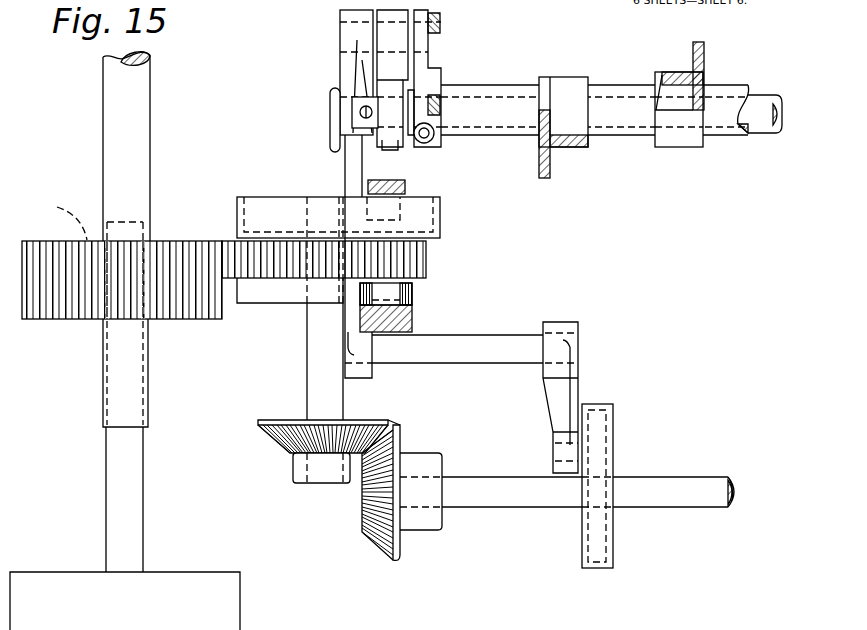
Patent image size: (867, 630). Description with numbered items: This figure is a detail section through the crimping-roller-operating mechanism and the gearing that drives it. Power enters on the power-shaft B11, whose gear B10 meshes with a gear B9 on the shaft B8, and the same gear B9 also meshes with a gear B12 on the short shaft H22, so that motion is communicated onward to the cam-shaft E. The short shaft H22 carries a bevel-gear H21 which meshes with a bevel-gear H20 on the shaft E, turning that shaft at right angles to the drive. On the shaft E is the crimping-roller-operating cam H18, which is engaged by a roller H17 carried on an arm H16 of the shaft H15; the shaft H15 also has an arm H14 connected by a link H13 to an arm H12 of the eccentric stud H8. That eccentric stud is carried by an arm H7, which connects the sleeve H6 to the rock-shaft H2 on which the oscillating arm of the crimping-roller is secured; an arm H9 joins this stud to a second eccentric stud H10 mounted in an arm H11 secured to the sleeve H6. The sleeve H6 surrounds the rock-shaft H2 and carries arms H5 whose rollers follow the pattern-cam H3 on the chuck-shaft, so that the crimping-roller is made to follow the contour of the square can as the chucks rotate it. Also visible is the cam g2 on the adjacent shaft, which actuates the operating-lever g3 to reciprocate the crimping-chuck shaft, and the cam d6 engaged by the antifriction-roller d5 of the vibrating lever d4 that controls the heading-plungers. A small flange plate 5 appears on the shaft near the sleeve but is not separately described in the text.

The shaft B8 is at (126, 146).
The gear B9 is at (185, 310).
The gear B10 is at (63, 209).
The power-shaft B11 is at (112, 457).
The gear B12 is at (422, 258).
The vibrating lever d4 is at (427, 315).
The antifriction-roller d5 is at (427, 288).
The cam d6 is at (257, 293).
The cam g2 is at (418, 212).
The operating-lever g3 is at (408, 185).
The rock-shaft H2 is at (763, 120).
The pattern-cam H3 is at (492, 175).
The flange plate 5 is at (539, 150).
The arm H5 is at (705, 70).
The sleeve H6 is at (615, 122).
The arm H7 is at (392, 132).
The eccentric stud H8 is at (442, 22).
The arm H9 is at (428, 52).
The eccentric stud H10 is at (438, 100).
The arm H11 is at (388, 66).
The arm H12 is at (348, 65).
The link H13 is at (333, 104).
The arm H14 is at (360, 372).
The shaft H15 is at (470, 338).
The arm H16 is at (573, 385).
The roller H17 is at (612, 425).
The crimping-roller-operating cam H18 is at (610, 548).
The bevel-gear H20 is at (362, 498).
The bevel-gear H21 is at (273, 440).
The short shaft H22 is at (306, 368).
The cam-shaft E is at (542, 498).